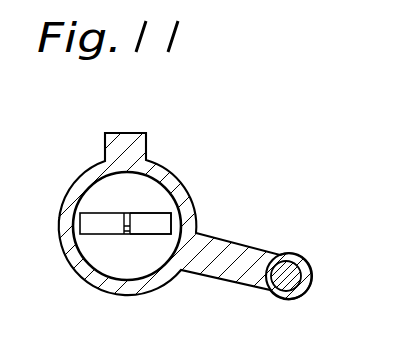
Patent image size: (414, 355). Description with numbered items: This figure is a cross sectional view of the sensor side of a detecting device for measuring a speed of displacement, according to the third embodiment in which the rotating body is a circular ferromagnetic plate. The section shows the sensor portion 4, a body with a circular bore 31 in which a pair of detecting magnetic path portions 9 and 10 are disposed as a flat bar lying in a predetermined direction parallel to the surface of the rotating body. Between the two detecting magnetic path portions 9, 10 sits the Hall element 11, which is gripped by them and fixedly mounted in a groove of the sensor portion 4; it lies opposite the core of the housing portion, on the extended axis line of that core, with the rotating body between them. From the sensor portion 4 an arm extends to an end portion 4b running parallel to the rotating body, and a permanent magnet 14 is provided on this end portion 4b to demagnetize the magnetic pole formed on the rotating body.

The sensor portion 4 is at (156, 168).
The bore of lever 31 is at (178, 177).
The detecting magnetic path portion 9 is at (102, 226).
The Hall element 11 is at (127, 233).
The detecting magnetic path portion 10 is at (163, 228).
The end portion 4b is at (298, 263).
The permanent magnet 14 is at (306, 273).